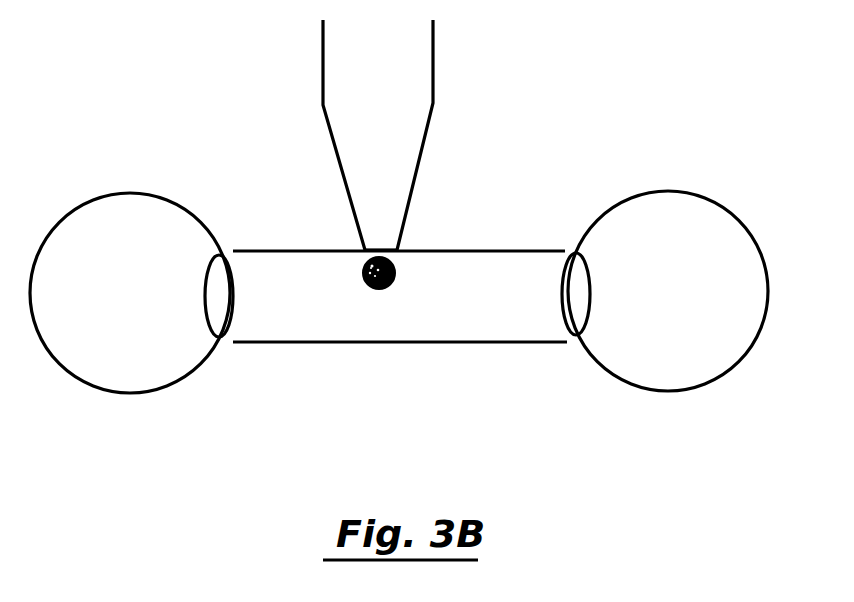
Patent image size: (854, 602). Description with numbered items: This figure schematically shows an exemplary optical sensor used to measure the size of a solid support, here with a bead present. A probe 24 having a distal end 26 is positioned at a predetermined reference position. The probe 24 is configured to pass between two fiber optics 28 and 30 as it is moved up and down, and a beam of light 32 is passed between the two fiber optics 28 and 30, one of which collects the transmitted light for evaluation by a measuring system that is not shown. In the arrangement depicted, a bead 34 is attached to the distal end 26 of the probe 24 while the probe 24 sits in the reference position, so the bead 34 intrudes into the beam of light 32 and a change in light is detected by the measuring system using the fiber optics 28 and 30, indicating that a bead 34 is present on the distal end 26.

The probe 24 is at (387, 80).
The distal end 26 is at (398, 266).
The fiber optic 28 is at (138, 368).
The fiber optic 30 is at (663, 367).
The beam of light 32 is at (415, 327).
The bead 34 is at (394, 280).